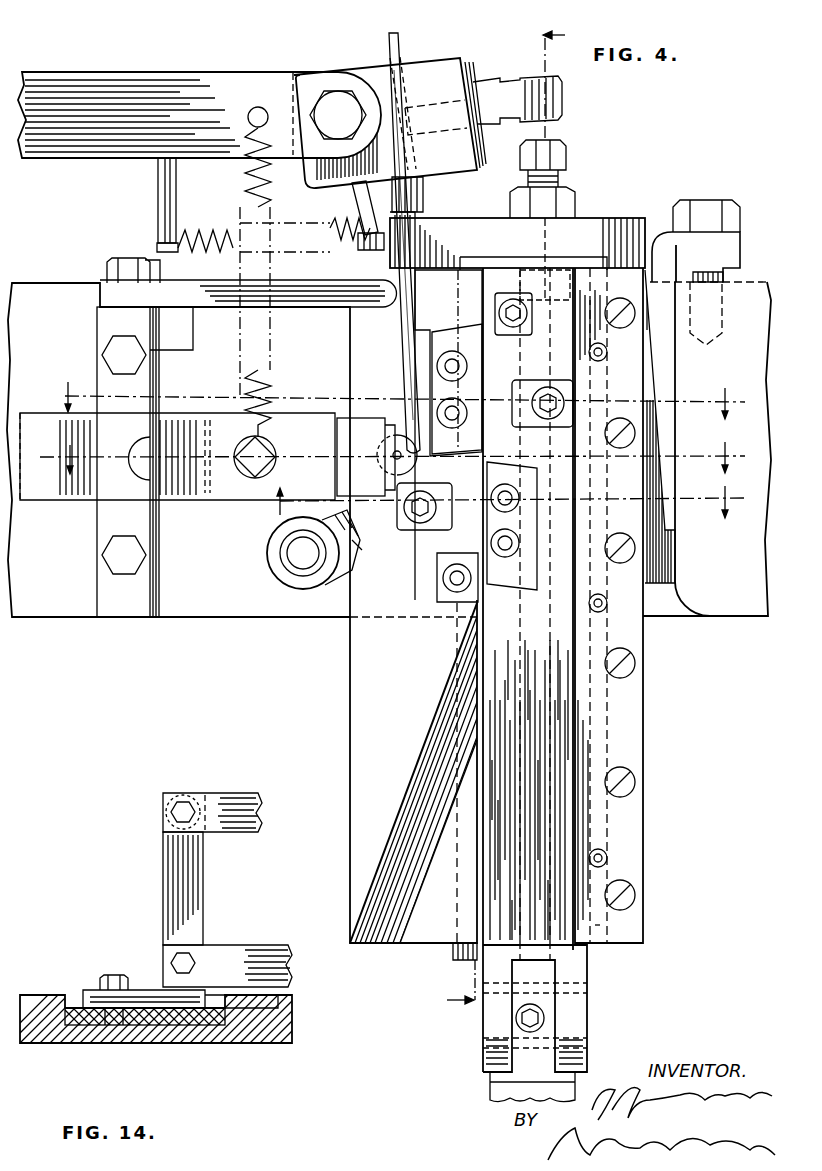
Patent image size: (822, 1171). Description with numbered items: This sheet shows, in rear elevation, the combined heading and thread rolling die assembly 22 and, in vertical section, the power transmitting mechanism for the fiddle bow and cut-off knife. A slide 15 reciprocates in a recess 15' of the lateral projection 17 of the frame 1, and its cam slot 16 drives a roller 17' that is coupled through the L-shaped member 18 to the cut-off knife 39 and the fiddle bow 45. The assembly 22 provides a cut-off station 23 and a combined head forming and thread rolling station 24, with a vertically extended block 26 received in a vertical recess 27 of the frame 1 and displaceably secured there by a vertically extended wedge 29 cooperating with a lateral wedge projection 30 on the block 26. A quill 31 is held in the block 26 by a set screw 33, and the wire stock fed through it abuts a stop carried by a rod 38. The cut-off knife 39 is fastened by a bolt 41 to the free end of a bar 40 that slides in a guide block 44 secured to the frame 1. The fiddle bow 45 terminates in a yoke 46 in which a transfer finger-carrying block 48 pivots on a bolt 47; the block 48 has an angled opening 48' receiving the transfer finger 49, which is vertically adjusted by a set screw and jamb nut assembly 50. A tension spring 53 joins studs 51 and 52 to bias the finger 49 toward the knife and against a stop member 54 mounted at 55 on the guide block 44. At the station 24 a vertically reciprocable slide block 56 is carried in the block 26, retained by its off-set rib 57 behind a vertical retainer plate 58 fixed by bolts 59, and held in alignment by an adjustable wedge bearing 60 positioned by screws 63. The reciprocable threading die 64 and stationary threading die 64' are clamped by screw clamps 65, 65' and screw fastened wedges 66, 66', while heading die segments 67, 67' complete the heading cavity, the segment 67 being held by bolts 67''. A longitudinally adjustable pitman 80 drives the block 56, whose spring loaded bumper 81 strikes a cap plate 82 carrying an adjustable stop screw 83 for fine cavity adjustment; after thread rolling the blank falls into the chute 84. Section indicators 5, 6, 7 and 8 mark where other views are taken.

In FIG. 4, the frame 1 is at (730, 605).
In FIG. 4, the section line 5- 5 is at (506, 524).
In FIG. 4, the section line 6- 6 is at (393, 458).
In FIG. 4, the section line 7- 7 is at (400, 400).
In FIG. 4, the section line 8- 8 is at (507, 502).
In FIG. 14, the slide 15 is at (147, 1037).
In FIG. 14, the recess 15' is at (241, 1030).
In FIG. 14, the cam slot 16 is at (92, 1043).
In FIG. 14, the lateral projection 17 is at (170, 1007).
In FIG. 14, the roller 17' is at (105, 1030).
In FIG. 14, the L-shaped member 18 is at (170, 882).
In FIG. 4, the combined heading and thread rolling die assembly 22 is at (605, 228).
In FIG. 4, the cut-off station 23 is at (392, 468).
In FIG. 4, the combined head forming and thread rolling station 24 is at (487, 455).
In FIG. 4, the block 26 is at (352, 695).
In FIG. 4, the vertical recess 27 is at (682, 362).
In FIG. 4, the vertically extended wedge 29 is at (660, 228).
In FIG. 4, the wedge projection 30 is at (672, 548).
In FIG. 4, the quill 31 is at (374, 457).
In FIG. 4, the set screw 33 is at (422, 195).
In FIG. 4, the rod 38 is at (295, 553).
In FIG. 4, the cut-off knife 39 is at (342, 440).
In FIG. 4, the bar 40 is at (32, 412).
In FIG. 14, the bar 40 is at (260, 945).
In FIG. 4, the bolt 41 is at (270, 468).
In FIG. 4, the guide block 44 is at (97, 518).
In FIG. 4, the fiddle bow 45 is at (190, 75).
In FIG. 14, the fiddle bow 45 is at (236, 793).
In FIG. 4, the yoke 46 is at (292, 72).
In FIG. 14, the yoke 46 is at (168, 812).
In FIG. 4, the bolt 47 is at (336, 95).
In FIG. 4, the transfer finger-carrying block 48 is at (393, 112).
In FIG. 4, the opening 48' is at (436, 103).
In FIG. 4, the transfer finger 49 is at (396, 42).
In FIG. 4, the set screw and jamb nut assembly 50 is at (478, 85).
In FIG. 4, the stud 51 is at (157, 190).
In FIG. 4, the stud 52 is at (350, 200).
In FIG. 4, the tension spring 53 is at (218, 235).
In FIG. 4, the stop member 54 is at (248, 282).
In FIG. 4, the mounting 55 is at (108, 268).
In FIG. 4, the slide block 56 is at (560, 695).
In FIG. 4, the off-set rib 57 is at (453, 958).
In FIG. 4, the vertical retainer plate 58 is at (633, 718).
In FIG. 4, the bolts 59 is at (632, 783).
In FIG. 4, the adjustable wedge bearing 60 is at (600, 928).
In FIG. 4, the screws 63 is at (605, 605).
In FIG. 4, the reciprocable threading die 64 is at (448, 363).
In FIG. 4, the stationary threading die 64' is at (436, 577).
In FIG. 4, the screw clamp 65 is at (568, 403).
In FIG. 4, the screw clamp 65' is at (416, 520).
In FIG. 4, the screw fastened wedge 66 is at (508, 284).
In FIG. 4, the screw fastened wedge 66' is at (413, 618).
In FIG. 4, the heading die segment 67 is at (498, 595).
In FIG. 4, the heading die segment 67' is at (493, 445).
In FIG. 4, the bolts 67'' is at (418, 399).
In FIG. 4, the pitman 80 is at (490, 1095).
In FIG. 4, the spring loaded bumper 81 is at (555, 275).
In FIG. 4, the cap plate 82 is at (580, 218).
In FIG. 4, the adjustable stop screw 83 is at (565, 145).
In FIG. 4, the chute 84 is at (420, 755).